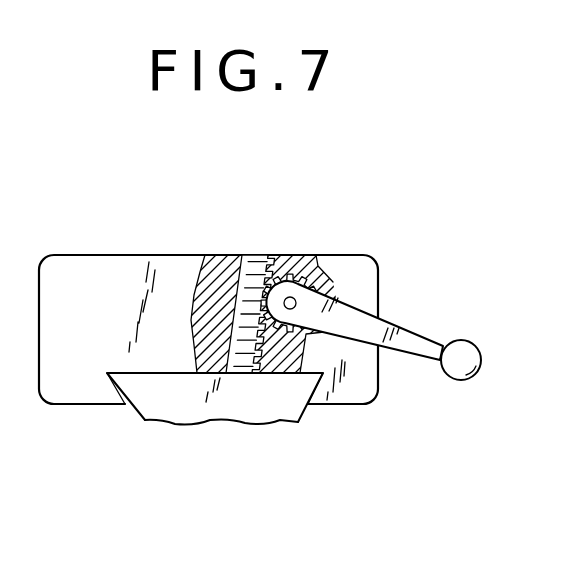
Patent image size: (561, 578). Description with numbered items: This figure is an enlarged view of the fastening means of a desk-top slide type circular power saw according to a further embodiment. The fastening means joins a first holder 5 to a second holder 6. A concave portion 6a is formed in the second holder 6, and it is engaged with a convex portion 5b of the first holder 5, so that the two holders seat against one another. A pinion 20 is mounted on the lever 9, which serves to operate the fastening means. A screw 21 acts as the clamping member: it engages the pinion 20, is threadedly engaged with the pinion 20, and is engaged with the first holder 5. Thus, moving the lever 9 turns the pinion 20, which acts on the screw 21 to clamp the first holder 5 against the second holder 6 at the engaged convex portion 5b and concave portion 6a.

The first holder 5 is at (215, 430).
The convex portion 5b is at (168, 403).
The second holder 6 is at (128, 272).
The concave portion 6a is at (125, 404).
The lever 9 is at (422, 345).
The pinion 20 is at (290, 265).
The screw 21 is at (232, 265).